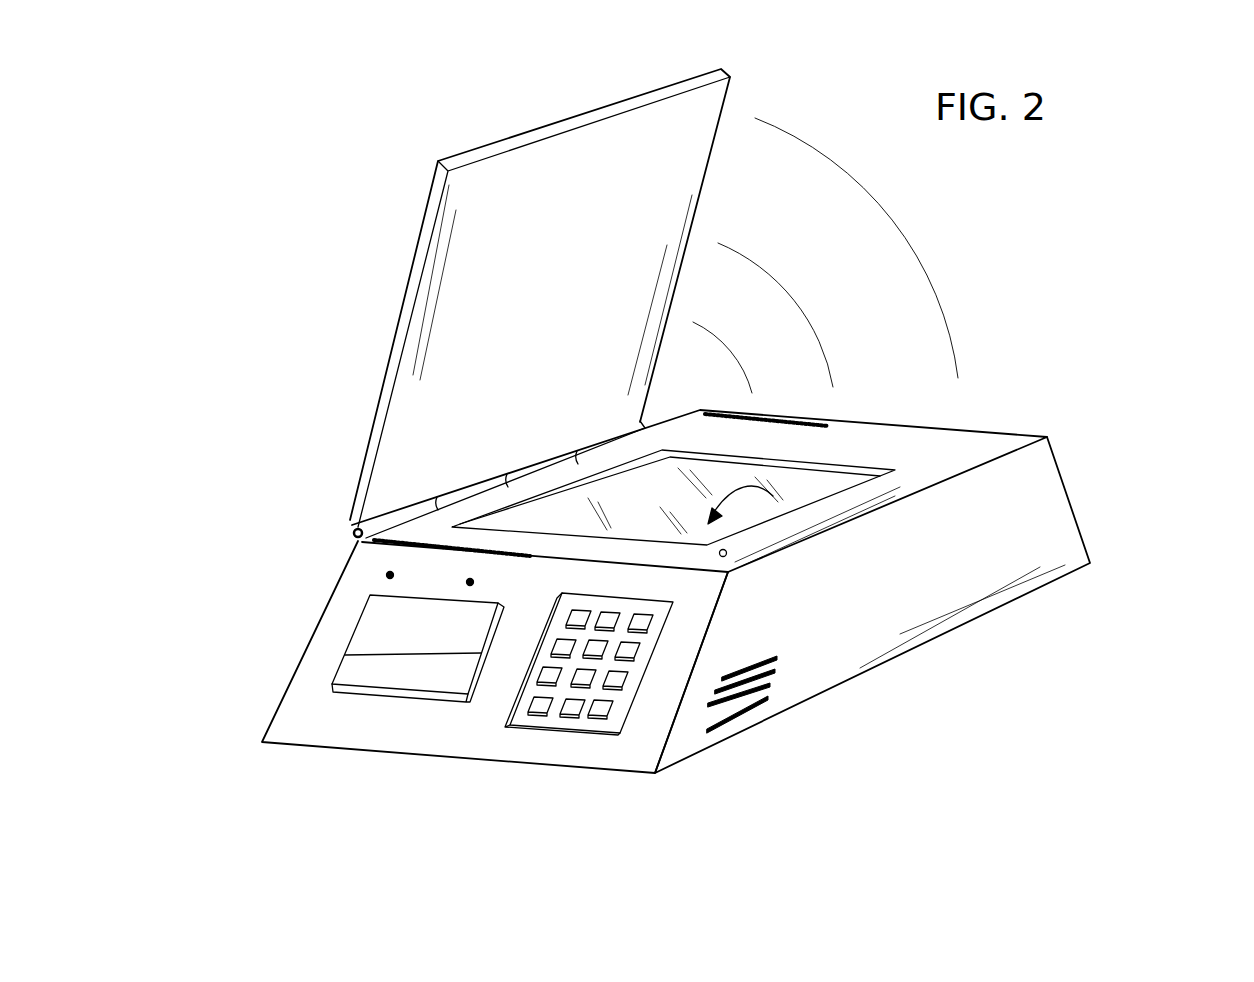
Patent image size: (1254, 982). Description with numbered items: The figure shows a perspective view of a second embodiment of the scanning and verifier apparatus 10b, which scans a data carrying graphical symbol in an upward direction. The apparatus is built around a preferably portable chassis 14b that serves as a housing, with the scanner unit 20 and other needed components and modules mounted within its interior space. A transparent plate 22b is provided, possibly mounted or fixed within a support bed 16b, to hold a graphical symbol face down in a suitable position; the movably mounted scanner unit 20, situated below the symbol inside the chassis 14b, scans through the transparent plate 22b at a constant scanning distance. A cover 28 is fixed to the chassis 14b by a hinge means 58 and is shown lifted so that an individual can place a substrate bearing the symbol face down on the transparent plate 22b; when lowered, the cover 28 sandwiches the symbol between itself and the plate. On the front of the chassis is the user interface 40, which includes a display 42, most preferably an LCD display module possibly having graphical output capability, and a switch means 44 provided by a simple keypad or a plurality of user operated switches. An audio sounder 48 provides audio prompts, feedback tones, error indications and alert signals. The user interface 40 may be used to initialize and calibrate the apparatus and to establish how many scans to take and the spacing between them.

The scanning and verifier apparatus 10b is at (713, 486).
The chassis 14b is at (953, 630).
The support bed 16b is at (977, 448).
The scanner unit 20 is at (767, 492).
The transparent plate 22b is at (732, 480).
The cover 28 is at (523, 162).
The user interface 40 is at (451, 722).
The display 42 is at (333, 673).
The switch means 44 is at (617, 720).
The audio sounder 48 is at (747, 700).
The hinge means 58 is at (397, 520).